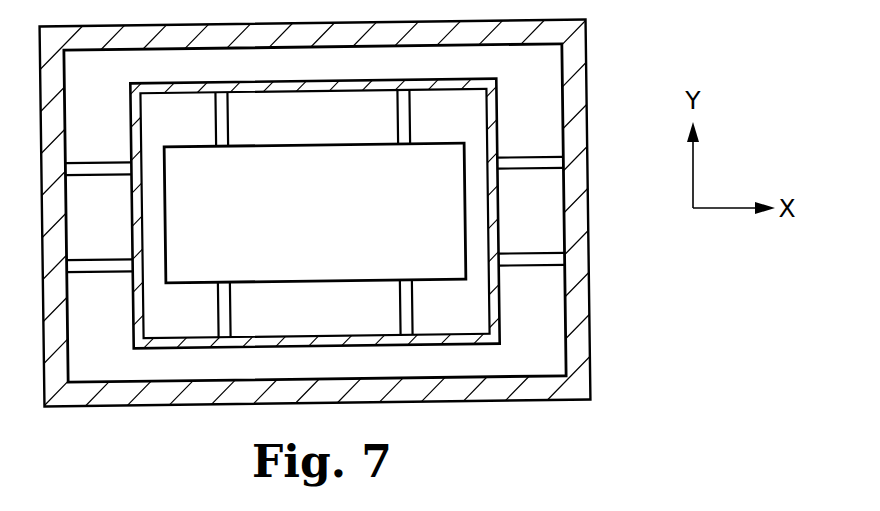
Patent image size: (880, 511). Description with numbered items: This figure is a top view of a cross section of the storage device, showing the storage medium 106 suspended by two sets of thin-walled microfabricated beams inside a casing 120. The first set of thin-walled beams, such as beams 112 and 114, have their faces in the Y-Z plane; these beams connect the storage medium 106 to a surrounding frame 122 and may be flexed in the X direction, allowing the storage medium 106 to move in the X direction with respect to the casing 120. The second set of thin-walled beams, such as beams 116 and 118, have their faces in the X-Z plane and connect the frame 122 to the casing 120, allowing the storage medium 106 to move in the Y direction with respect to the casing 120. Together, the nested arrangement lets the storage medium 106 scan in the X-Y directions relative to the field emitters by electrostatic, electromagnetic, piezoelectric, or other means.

The storage medium 106 is at (338, 222).
The thin-walled beam 112 is at (222, 121).
The thin-walled beam 114 is at (405, 123).
The thin-walled beam 116 is at (529, 255).
The thin-walled beam 118 is at (528, 157).
The casing 120 is at (577, 343).
The frame 122 is at (492, 115).